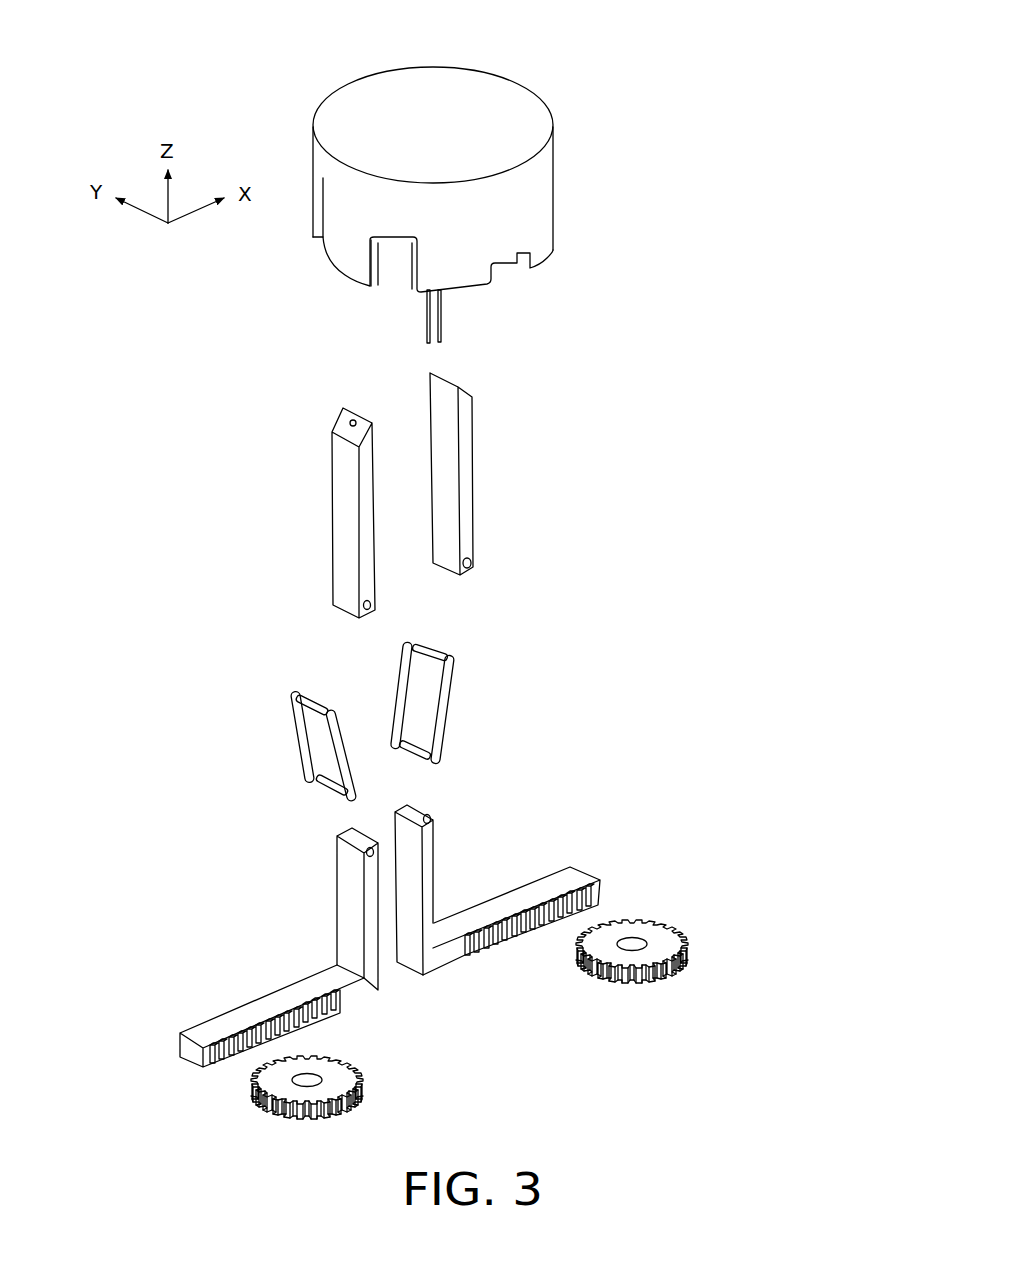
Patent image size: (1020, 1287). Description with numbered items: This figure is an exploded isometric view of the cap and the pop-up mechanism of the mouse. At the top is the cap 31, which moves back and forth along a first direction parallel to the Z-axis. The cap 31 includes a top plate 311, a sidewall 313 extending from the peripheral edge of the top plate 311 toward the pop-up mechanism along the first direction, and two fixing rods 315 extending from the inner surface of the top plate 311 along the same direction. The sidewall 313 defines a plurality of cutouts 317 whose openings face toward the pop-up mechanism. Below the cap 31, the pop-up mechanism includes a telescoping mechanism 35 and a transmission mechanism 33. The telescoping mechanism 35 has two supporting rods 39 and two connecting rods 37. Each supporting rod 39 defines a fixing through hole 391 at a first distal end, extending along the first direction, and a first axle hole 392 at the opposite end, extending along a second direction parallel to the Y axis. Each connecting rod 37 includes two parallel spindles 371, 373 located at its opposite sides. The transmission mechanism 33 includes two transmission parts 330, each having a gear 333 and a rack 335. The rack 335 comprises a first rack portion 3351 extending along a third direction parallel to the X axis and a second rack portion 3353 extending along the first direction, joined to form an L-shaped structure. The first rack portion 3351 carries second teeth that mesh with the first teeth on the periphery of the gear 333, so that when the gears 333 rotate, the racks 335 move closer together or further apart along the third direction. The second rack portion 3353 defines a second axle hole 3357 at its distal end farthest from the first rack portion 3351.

The cap 31 is at (672, 55).
The top plate 311 is at (503, 113).
The sidewall 313 is at (523, 193).
The fixing rods 315 is at (443, 318).
The cutouts 317 is at (400, 263).
The telescoping mechanism 35 is at (652, 415).
The supporting rod 39 is at (490, 455).
The fixing through hole 391 is at (350, 423).
The first axle hole 392 is at (367, 605).
The connecting rod 37 is at (475, 697).
The spindle 371 is at (433, 653).
The spindle 373 is at (413, 750).
The transmission mechanism 33 is at (309, 860).
The transmission part 330 is at (780, 847).
The gear 333 is at (680, 937).
The rack 335 is at (710, 813).
The first rack portion 3351 is at (570, 880).
The second rack portion 3353 is at (423, 873).
The second axle hole 3357 is at (431, 828).